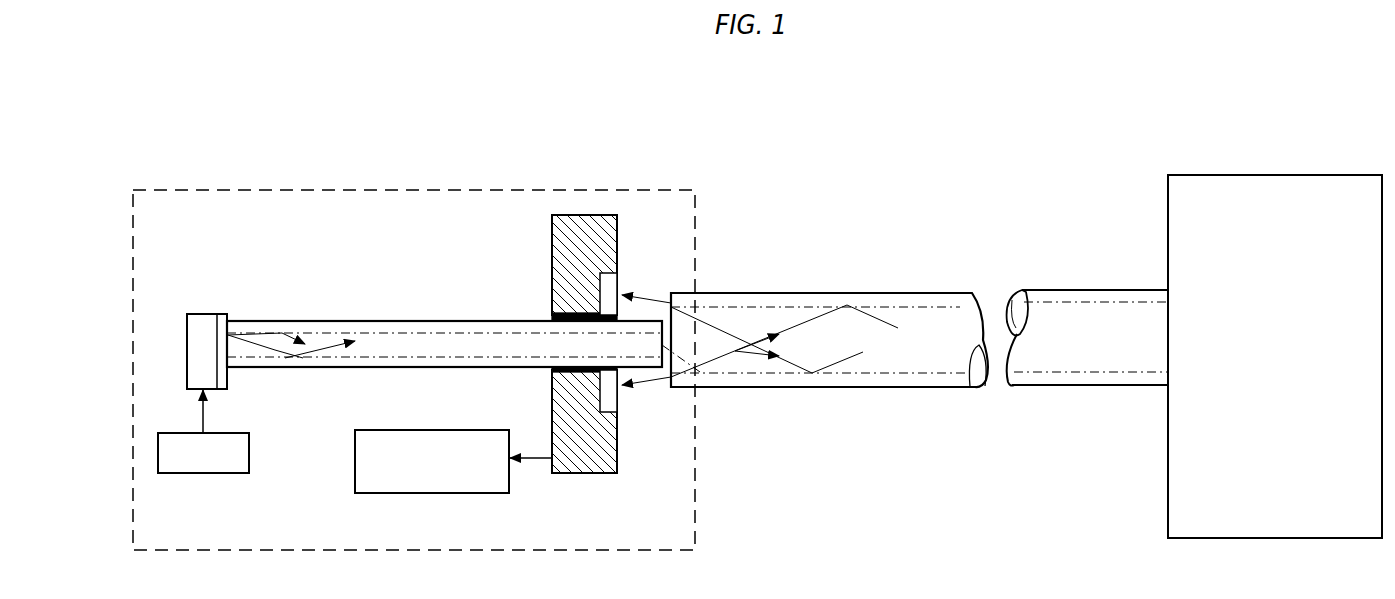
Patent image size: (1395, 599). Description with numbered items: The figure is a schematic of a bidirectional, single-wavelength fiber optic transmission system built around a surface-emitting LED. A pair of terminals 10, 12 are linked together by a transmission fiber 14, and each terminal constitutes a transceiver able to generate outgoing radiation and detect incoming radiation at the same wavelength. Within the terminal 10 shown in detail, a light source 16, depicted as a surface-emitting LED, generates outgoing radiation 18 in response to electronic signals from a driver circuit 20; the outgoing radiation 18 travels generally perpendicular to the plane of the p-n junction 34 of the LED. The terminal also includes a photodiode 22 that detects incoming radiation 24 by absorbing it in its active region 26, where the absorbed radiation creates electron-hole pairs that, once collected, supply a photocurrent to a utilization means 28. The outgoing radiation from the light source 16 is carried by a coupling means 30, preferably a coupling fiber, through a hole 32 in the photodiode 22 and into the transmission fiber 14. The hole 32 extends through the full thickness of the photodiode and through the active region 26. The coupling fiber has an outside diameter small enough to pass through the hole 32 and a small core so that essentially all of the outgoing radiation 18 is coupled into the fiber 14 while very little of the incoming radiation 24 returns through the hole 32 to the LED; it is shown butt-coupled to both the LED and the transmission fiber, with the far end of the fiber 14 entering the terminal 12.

The terminal 10 is at (300, 188).
The terminal 12 is at (1212, 175).
The transmission fiber 14 is at (813, 293).
The light source 16 is at (187, 345).
The outgoing radiation 18 is at (677, 326).
The driver circuit 20 is at (190, 433).
The photodiode 22 is at (552, 262).
The incoming radiation 24 is at (790, 326).
The active region 26 is at (618, 287).
The utilization means 28 is at (437, 430).
The coupling means 30 is at (440, 321).
The hole 32 is at (552, 375).
The p-n junction 34 is at (228, 318).